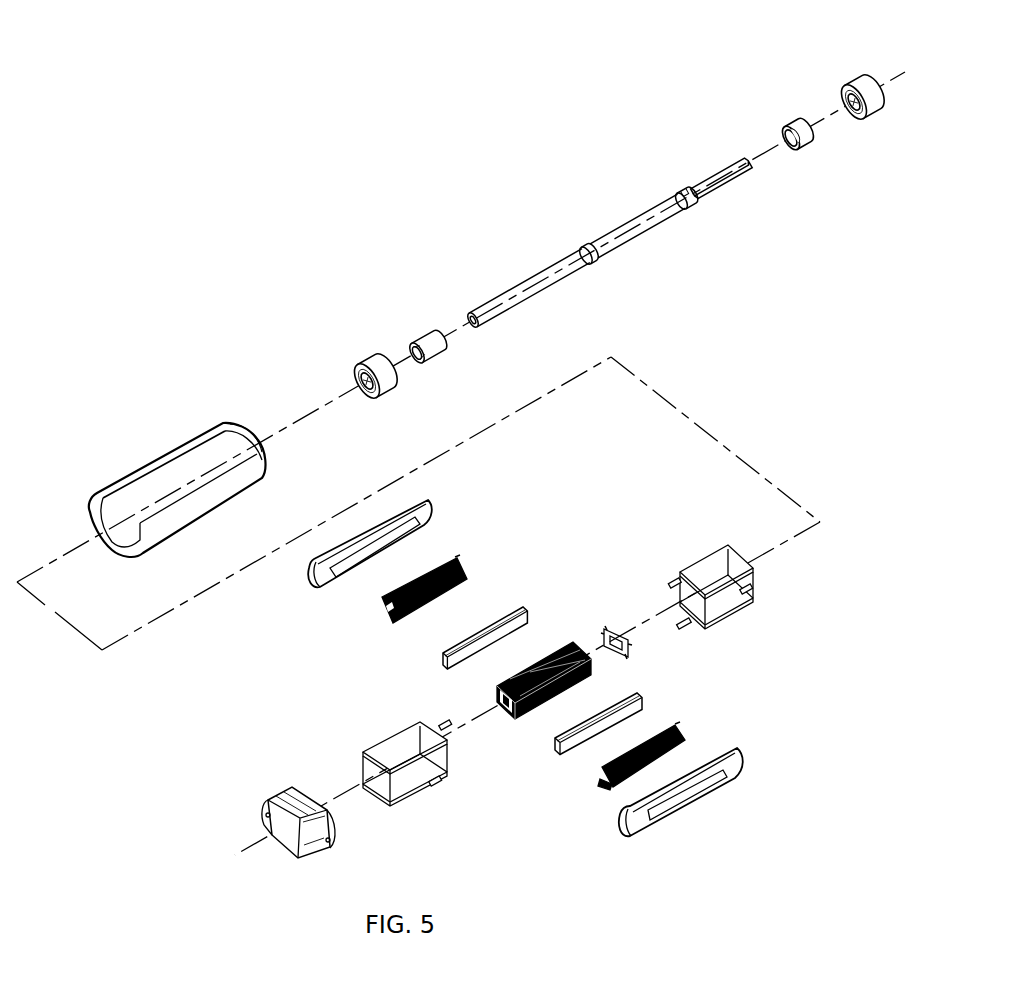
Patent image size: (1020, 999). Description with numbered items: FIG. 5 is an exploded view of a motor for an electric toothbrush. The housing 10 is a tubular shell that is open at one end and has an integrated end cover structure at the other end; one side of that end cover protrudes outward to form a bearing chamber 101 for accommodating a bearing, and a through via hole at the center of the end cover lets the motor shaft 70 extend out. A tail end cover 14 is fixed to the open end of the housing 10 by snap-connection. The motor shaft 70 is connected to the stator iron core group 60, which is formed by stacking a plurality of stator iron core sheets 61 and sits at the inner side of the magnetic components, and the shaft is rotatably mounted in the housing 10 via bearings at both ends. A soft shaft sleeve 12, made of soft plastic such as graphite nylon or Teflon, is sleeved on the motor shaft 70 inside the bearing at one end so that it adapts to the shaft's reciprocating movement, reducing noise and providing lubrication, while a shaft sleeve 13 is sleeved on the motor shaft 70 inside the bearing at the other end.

The housing 10 is at (130, 483).
The bearing chamber 101 is at (243, 428).
The soft shaft sleeve 12 is at (417, 332).
The shaft sleeve 13 is at (788, 123).
The tail end cover 14 is at (283, 818).
The stator iron core group 60 is at (575, 642).
The stator iron core sheet 61 is at (630, 642).
The motor shaft 70 is at (557, 265).